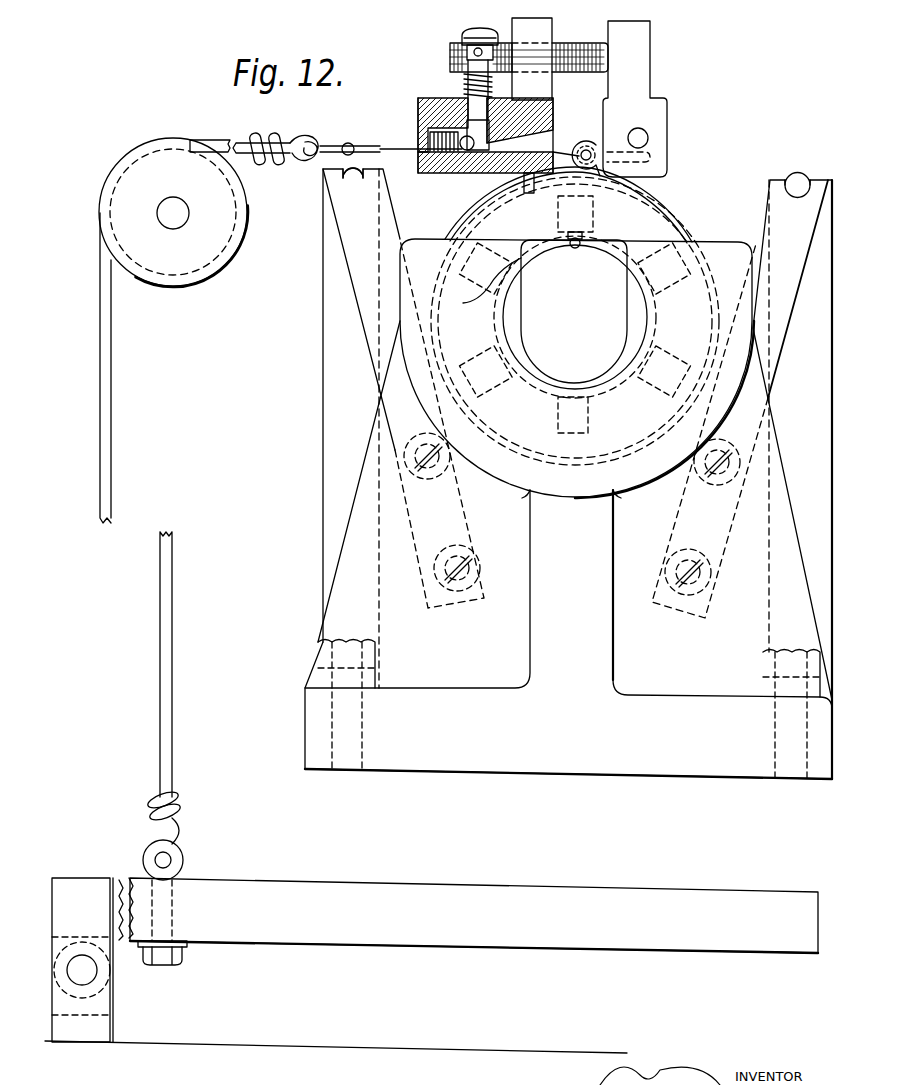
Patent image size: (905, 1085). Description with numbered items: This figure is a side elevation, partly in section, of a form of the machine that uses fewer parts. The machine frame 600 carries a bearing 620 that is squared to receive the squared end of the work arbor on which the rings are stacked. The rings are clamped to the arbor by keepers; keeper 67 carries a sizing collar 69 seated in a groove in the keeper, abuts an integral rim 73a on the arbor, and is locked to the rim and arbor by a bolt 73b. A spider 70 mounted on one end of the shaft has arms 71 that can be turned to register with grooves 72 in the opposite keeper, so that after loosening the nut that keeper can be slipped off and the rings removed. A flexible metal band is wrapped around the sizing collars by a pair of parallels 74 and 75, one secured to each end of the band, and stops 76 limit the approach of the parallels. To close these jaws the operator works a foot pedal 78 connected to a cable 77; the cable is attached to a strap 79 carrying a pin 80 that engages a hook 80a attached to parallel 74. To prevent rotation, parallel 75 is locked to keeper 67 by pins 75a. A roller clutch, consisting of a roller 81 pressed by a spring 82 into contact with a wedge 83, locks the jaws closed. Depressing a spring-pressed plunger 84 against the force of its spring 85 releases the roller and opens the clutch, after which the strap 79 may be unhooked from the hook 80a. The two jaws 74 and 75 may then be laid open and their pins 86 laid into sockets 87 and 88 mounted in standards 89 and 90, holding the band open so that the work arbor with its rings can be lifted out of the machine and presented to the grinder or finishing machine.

The frame 600 is at (606, 641).
The bearing 620 is at (728, 260).
The keeper 67 is at (652, 226).
The sizing collar 69 is at (682, 235).
The spider 70 is at (624, 368).
The arms 71 is at (490, 283).
The grooves 72 is at (558, 215).
The integral rim 73a is at (503, 297).
The bolt 73b is at (577, 250).
The parallel 74 is at (653, 108).
The parallel 75 is at (527, 114).
The pins 75a is at (472, 212).
The stops 76 is at (579, 44).
The cable 77 is at (110, 448).
The foot pedal 78 is at (300, 900).
The strap 79 is at (380, 147).
The pin 80 is at (588, 148).
The hook 80a is at (600, 172).
The roller 81 is at (467, 150).
The spring 82 is at (440, 160).
The wedge 83 is at (430, 136).
The spring-pressed plunger 84 is at (477, 130).
The spring 85 is at (463, 87).
The pins 86 is at (647, 140).
The socket 87 is at (355, 187).
The socket 88 is at (798, 179).
The standard 89 is at (368, 308).
The standard 90 is at (783, 298).